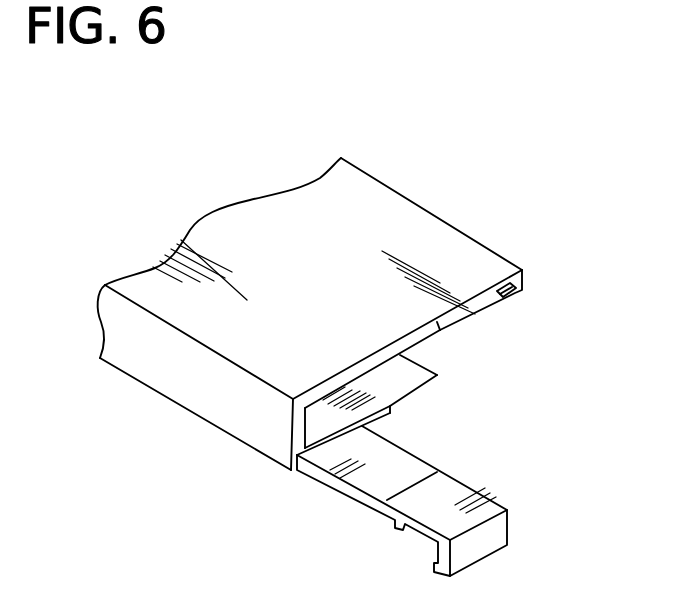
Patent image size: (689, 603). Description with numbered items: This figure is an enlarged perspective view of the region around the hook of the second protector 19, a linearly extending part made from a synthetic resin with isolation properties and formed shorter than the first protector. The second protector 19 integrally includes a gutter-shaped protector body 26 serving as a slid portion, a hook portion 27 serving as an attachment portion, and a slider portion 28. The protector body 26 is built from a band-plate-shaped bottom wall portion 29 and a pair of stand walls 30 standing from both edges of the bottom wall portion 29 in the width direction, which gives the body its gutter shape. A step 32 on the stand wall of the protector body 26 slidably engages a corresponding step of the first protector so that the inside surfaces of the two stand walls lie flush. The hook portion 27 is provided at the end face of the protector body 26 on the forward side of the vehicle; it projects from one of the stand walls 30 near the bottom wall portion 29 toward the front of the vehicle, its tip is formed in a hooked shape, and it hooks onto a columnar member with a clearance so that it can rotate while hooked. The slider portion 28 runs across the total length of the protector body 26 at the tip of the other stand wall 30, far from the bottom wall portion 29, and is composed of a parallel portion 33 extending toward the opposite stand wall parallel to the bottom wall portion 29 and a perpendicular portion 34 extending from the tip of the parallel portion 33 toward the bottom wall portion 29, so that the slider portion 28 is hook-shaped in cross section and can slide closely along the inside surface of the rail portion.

The second protector 19 is at (455, 229).
The protector body 26 is at (392, 414).
The hook portion 27 is at (480, 493).
The slider portion 28 is at (524, 271).
The bottom wall portion 29 is at (262, 416).
The stand walls 30 is at (360, 228).
The step 32 is at (441, 328).
The parallel portion 33 is at (510, 288).
The perpendicular portion 34 is at (515, 296).